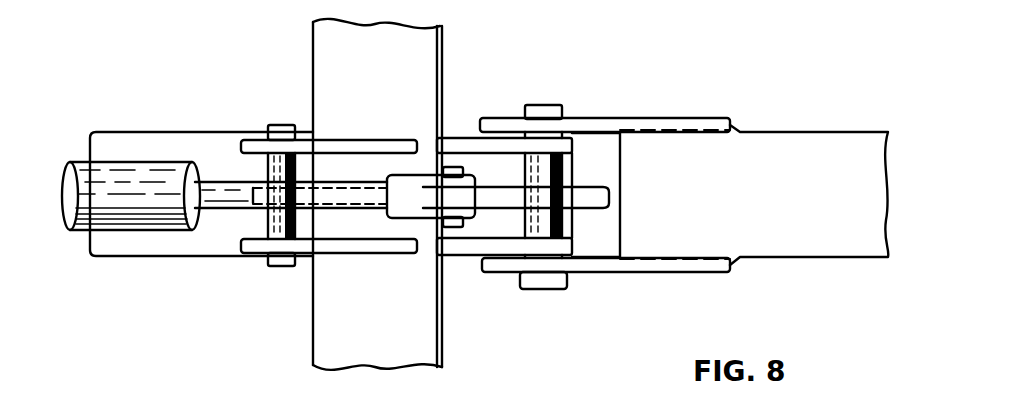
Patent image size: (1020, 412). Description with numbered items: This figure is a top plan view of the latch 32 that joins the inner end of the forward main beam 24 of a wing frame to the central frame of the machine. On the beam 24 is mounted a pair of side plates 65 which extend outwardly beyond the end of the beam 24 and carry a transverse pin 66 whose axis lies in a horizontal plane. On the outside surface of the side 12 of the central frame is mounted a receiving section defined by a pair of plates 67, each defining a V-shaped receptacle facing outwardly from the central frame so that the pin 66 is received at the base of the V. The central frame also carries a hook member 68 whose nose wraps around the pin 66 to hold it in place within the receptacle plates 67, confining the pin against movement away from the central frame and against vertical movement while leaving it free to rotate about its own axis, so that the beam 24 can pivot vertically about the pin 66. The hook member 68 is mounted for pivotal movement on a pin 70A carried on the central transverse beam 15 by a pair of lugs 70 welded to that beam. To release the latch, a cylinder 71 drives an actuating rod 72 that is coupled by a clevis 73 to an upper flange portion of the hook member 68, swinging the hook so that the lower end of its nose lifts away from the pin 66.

The side 12 is at (311, 35).
The transverse beam 15 is at (132, 130).
The forward main beam 24 is at (856, 130).
The latch 32 is at (642, 86).
The side plates 65 is at (659, 116).
The transverse pin 66 is at (546, 99).
The plates 67 is at (461, 135).
The hook member 68 is at (601, 184).
The lugs 70 is at (341, 136).
The pin 70A is at (280, 121).
The cylinder 71 is at (122, 234).
The actuating rod 72 is at (217, 216).
The clevis 73 is at (427, 224).